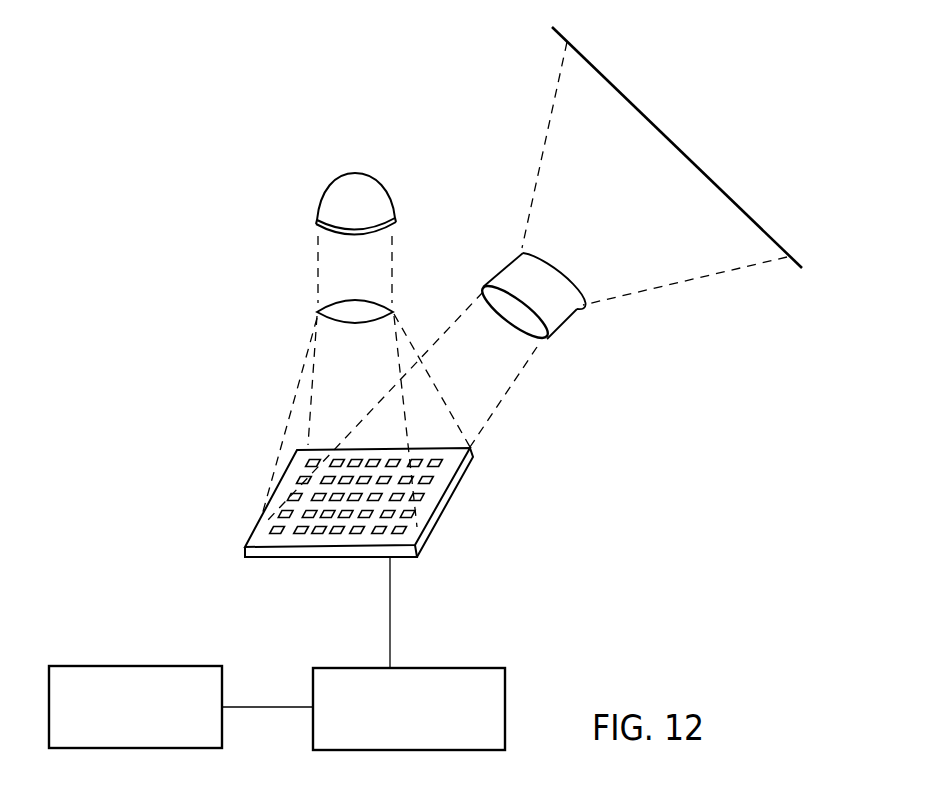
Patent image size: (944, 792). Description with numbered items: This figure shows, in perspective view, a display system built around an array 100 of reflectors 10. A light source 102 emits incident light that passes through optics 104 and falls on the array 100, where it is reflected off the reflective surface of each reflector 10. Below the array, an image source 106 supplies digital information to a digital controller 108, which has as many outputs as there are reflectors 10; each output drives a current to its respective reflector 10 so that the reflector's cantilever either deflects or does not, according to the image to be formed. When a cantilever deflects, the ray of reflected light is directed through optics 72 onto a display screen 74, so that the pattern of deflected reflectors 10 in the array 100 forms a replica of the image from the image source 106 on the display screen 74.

The reflector 10 is at (297, 458).
The optics 72 is at (567, 327).
The display screen 74 is at (743, 207).
The array 100 is at (326, 476).
The light source 102 is at (387, 190).
The optics 104 is at (373, 300).
The image source 106 is at (140, 665).
The digital controller 108 is at (483, 667).